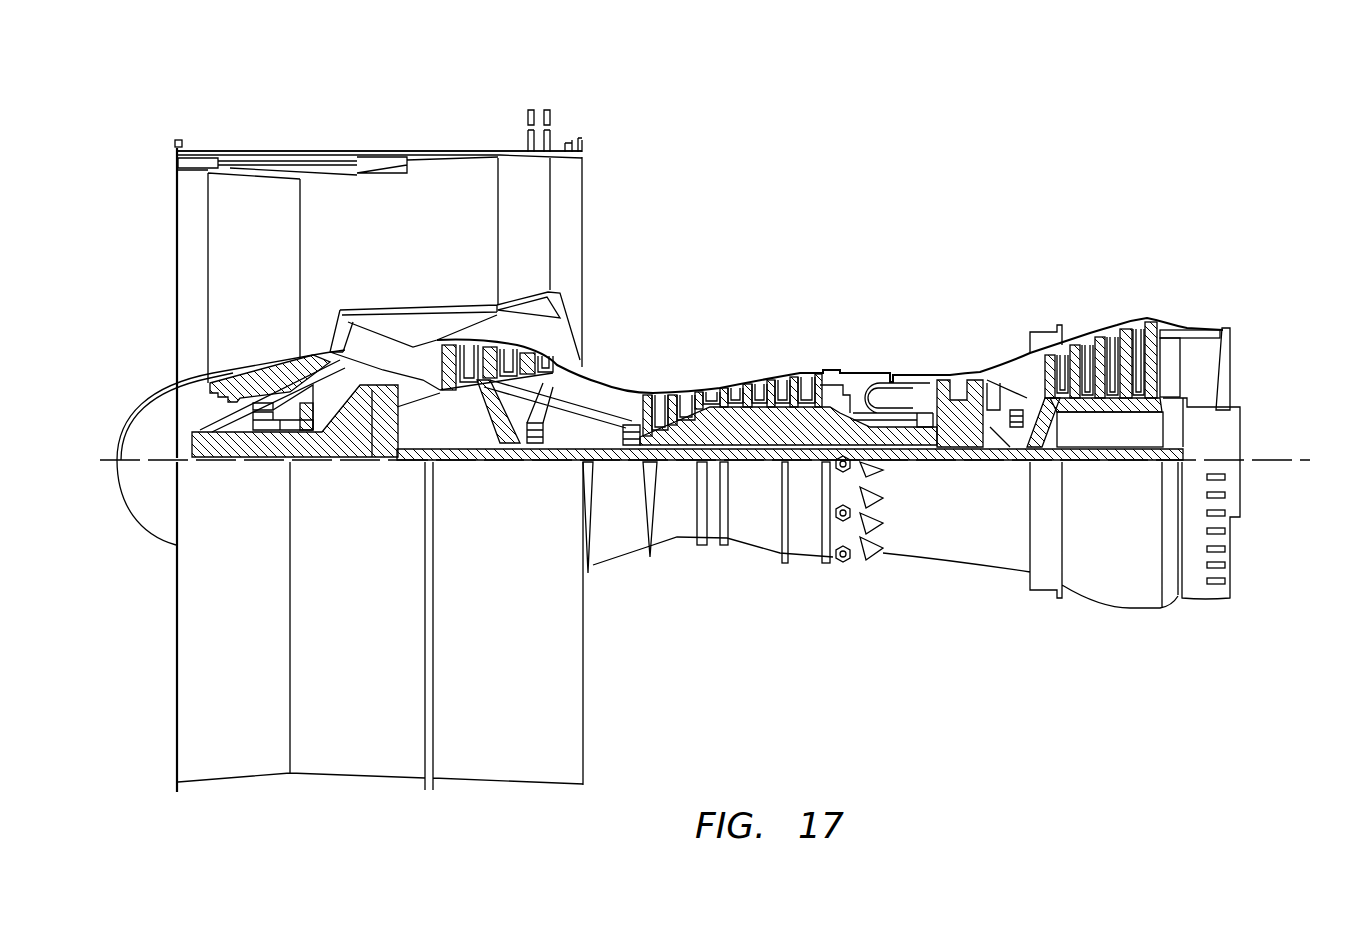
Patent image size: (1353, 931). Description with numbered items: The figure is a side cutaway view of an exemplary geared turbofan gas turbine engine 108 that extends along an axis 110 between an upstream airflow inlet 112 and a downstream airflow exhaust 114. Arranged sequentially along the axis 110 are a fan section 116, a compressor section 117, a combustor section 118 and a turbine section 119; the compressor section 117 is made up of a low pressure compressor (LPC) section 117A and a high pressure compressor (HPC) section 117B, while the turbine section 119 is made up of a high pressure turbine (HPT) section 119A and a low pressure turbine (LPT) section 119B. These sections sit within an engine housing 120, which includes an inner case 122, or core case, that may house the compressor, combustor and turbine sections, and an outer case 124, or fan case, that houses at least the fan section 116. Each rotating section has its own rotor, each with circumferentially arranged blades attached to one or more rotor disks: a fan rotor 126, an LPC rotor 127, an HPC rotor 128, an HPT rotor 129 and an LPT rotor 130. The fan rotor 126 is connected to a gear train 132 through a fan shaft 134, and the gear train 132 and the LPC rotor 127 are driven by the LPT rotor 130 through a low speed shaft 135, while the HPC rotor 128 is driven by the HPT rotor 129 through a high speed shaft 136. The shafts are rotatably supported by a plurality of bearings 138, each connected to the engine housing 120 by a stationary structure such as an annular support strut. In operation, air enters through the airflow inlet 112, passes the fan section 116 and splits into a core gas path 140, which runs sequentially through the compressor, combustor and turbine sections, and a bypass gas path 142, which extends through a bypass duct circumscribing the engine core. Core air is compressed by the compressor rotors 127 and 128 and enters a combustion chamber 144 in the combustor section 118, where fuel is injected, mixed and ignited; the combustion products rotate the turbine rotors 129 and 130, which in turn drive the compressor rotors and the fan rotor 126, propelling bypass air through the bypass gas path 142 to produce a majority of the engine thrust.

The geared turbofan gas turbine engine 108 is at (150, 124).
The axis 110 is at (1300, 488).
The upstream airflow inlet 112 is at (173, 222).
The downstream airflow exhaust 114 is at (1235, 352).
The fan section 116 is at (345, 127).
The compressor section 117 is at (805, 68).
The low pressure compressor (LPC) section 117A is at (585, 122).
The high pressure compressor (HPC) section 117B is at (805, 310).
The combustor section 118 is at (925, 310).
The turbine section 119 is at (1192, 233).
The high pressure turbine (HPT) section 119A is at (1010, 310).
The low pressure turbine (LPT) section 119B is at (1195, 310).
The engine housing 120 is at (598, 566).
The inner case 122 is at (803, 560).
The outer case 124 is at (535, 795).
The fan rotor 126 is at (183, 380).
The LPC rotor 127 is at (480, 435).
The HPC rotor 128 is at (756, 432).
The HPT rotor 129 is at (945, 460).
The LPT rotor 130 is at (1105, 405).
The gear train 132 is at (382, 462).
The fan shaft 134 is at (250, 458).
The low speed shaft 135 is at (1113, 460).
The high speed shaft 136 is at (888, 462).
The bearings 138 is at (288, 433).
The core gas path 140 is at (600, 392).
The bypass gas path 142 is at (455, 284).
The combustion chamber 144 is at (888, 395).